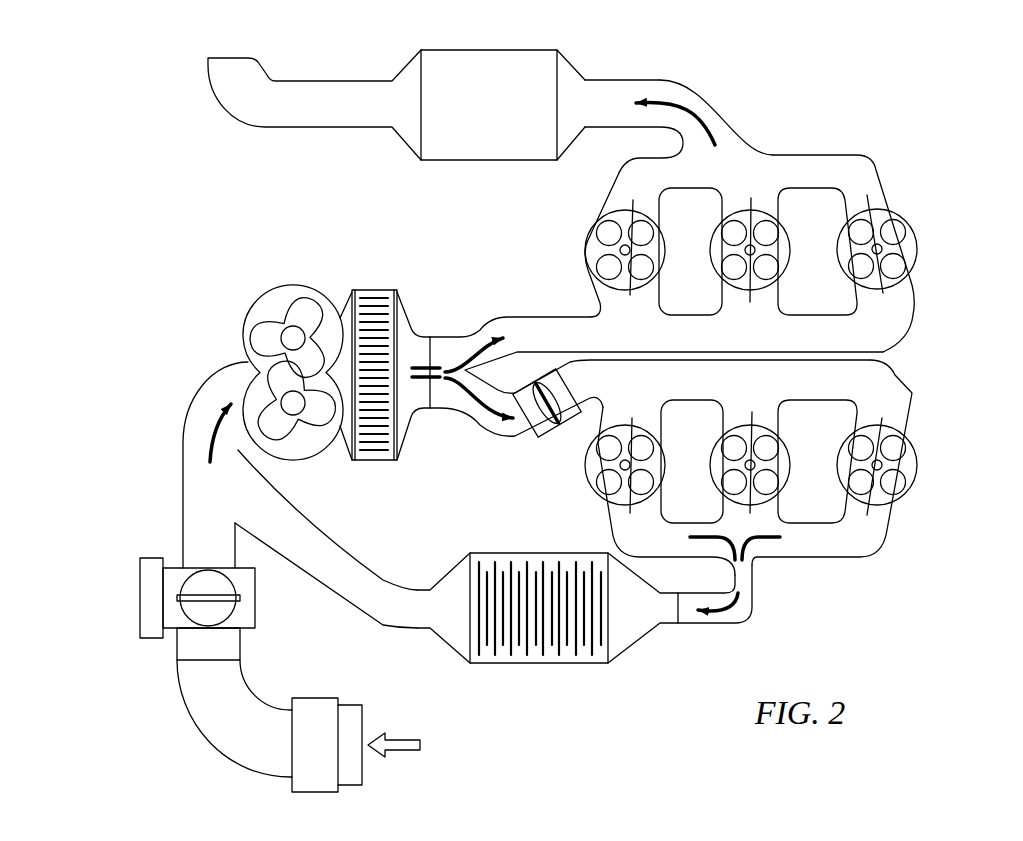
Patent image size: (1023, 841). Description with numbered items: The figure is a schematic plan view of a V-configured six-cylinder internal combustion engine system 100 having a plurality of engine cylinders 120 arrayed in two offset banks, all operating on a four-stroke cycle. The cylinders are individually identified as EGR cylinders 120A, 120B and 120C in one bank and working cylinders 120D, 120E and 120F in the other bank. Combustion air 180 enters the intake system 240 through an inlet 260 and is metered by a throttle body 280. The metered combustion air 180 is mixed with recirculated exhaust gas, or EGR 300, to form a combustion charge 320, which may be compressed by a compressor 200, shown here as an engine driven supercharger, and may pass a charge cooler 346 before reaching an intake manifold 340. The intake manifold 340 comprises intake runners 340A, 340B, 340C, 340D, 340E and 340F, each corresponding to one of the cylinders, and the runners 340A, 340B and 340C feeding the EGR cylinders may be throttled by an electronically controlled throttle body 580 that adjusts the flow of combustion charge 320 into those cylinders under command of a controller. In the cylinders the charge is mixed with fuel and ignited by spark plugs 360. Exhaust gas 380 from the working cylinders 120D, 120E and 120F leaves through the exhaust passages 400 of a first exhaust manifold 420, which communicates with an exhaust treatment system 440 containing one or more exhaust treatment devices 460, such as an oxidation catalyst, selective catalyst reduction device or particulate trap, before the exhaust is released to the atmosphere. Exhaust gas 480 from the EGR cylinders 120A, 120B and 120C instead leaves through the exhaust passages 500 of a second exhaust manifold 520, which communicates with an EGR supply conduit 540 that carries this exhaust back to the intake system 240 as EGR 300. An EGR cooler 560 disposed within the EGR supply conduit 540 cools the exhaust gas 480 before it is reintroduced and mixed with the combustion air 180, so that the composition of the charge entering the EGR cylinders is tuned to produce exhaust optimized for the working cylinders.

The internal combustion engine system 100 is at (870, 126).
The engine cylinders 120 is at (926, 251).
The cylinder #1 (EGR cylinder) 120A is at (590, 462).
The cylinder #2 (EGR cylinder) 120B is at (789, 500).
The cylinder #3 (EGR cylinder) 120C is at (903, 465).
The cylinder #4 (working cylinder) 120D is at (590, 240).
The cylinder #5 (working cylinder) 120E is at (791, 232).
The cylinder #6 (working cylinder) 120F is at (904, 247).
The combustion air 180 is at (400, 740).
The compressor 200 is at (251, 299).
The intake system 240 is at (182, 500).
The inlet 260 is at (365, 755).
The throttle body 280 is at (147, 597).
The EGR (recirculated exhaust gas) 300 is at (327, 558).
The combustion charge 320 is at (205, 438).
The intake manifold 340 is at (528, 312).
The intake runner 340A is at (648, 418).
The intake runner 340B is at (778, 402).
The intake runner 340C is at (907, 394).
The intake runner 340D is at (650, 300).
The intake runner 340E is at (778, 312).
The intake runner 340F is at (913, 318).
The intercooler 346 is at (447, 332).
The spark plugs 360 is at (907, 441).
The exhaust gas 380 is at (697, 110).
The exhaust passages 400 is at (880, 178).
The first exhaust manifold 420 is at (733, 115).
The exhaust treatment system 440 is at (638, 50).
The exhaust treatment devices 460 is at (466, 112).
The exhaust gas 480 is at (750, 596).
The exhaust passages 500 is at (622, 537).
The second exhaust manifold 520 is at (851, 564).
The EGR supply conduit 540 is at (336, 603).
The EGR cooler 560 is at (540, 663).
The electronically controlled throttle body 580 is at (544, 440).